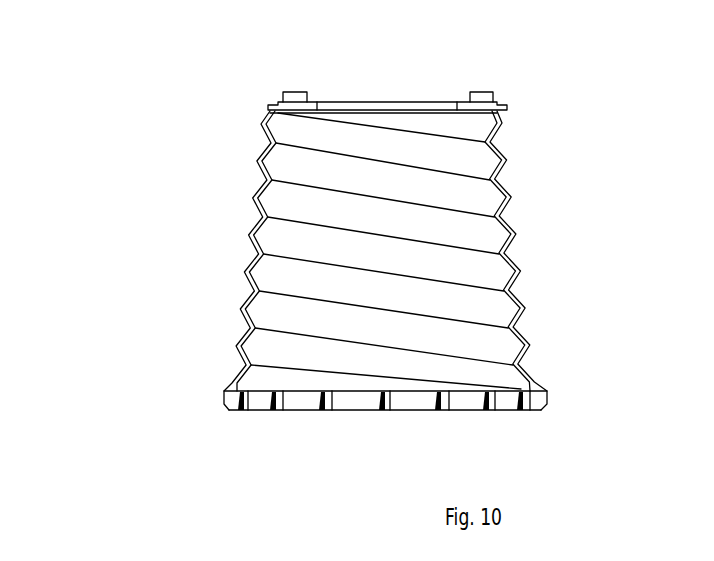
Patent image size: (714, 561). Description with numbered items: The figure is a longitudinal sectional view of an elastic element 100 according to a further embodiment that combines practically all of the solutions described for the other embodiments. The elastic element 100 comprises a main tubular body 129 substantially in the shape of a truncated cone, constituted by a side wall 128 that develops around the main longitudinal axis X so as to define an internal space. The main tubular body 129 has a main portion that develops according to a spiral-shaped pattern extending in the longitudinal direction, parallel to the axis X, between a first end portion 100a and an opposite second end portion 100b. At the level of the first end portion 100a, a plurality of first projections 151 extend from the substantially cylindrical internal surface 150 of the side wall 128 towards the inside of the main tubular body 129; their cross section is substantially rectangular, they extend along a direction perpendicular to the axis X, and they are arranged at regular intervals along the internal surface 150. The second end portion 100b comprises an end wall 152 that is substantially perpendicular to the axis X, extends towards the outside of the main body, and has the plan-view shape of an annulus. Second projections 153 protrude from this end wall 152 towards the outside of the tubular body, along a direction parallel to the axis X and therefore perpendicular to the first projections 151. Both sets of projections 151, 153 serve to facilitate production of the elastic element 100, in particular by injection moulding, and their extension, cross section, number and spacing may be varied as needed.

The elastic element 100 is at (337, 260).
The first end portion 100a is at (451, 444).
The second end portion 100b is at (409, 64).
The side wall 128 is at (523, 298).
The main tubular body 129 is at (518, 218).
The internal surface 150 is at (303, 405).
The projections 151 is at (442, 402).
The end wall 152 is at (463, 100).
The second projections 153 is at (297, 97).